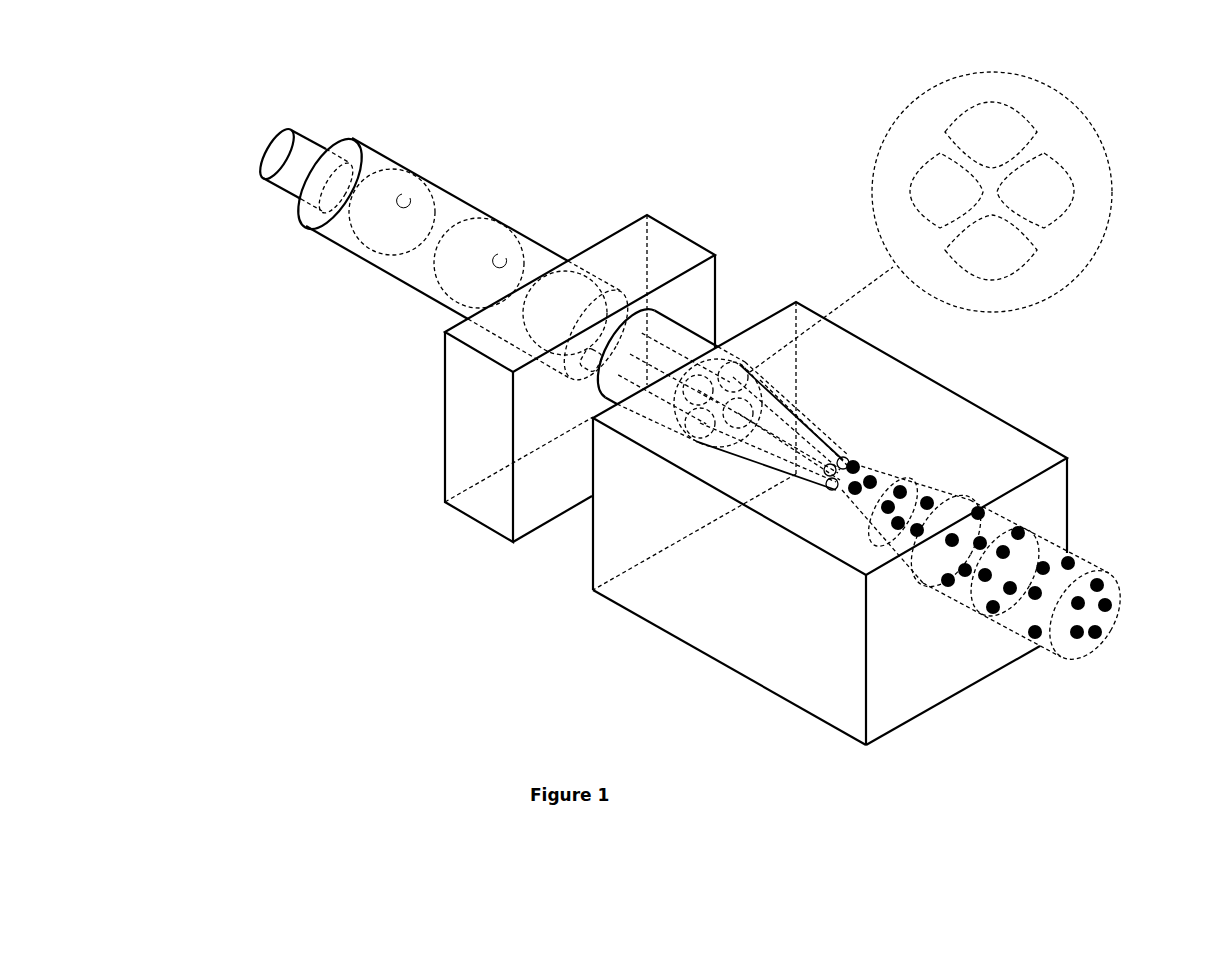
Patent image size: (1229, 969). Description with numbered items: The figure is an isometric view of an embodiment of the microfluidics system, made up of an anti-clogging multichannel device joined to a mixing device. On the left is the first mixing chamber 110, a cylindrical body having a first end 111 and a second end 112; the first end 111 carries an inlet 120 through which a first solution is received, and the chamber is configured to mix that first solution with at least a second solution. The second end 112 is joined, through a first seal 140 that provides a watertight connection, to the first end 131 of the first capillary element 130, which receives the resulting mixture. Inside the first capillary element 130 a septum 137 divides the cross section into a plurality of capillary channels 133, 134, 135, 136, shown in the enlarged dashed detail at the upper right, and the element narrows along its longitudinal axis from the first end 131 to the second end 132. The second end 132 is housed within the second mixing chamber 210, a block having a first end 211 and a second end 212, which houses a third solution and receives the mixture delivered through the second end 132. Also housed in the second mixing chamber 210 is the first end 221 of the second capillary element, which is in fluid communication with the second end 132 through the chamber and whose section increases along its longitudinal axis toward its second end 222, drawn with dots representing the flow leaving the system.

The first mixing chamber 110 is at (408, 270).
The first end of the first mixing chamber 111 is at (331, 190).
The second end of the first mixing chamber 112 is at (462, 327).
The inlet 120 is at (263, 128).
The first capillary element 130 is at (594, 543).
The first end of the first capillary element 131 is at (716, 318).
The second end of the first capillary element 132 is at (848, 455).
The capillary channel 133 is at (970, 137).
The capillary channel 134 is at (908, 192).
The capillary channel 135 is at (1066, 185).
The capillary channel 136 is at (1012, 248).
The septum 137 is at (1003, 76).
The first seal 140 is at (468, 513).
The second mixing chamber 210 is at (724, 647).
The first end of the second mixing chamber 211 is at (605, 570).
The second end of the second mixing chamber 212 is at (890, 708).
The first end of the second capillary element 221 is at (890, 480).
The second end of the second capillary element 222 is at (1090, 562).